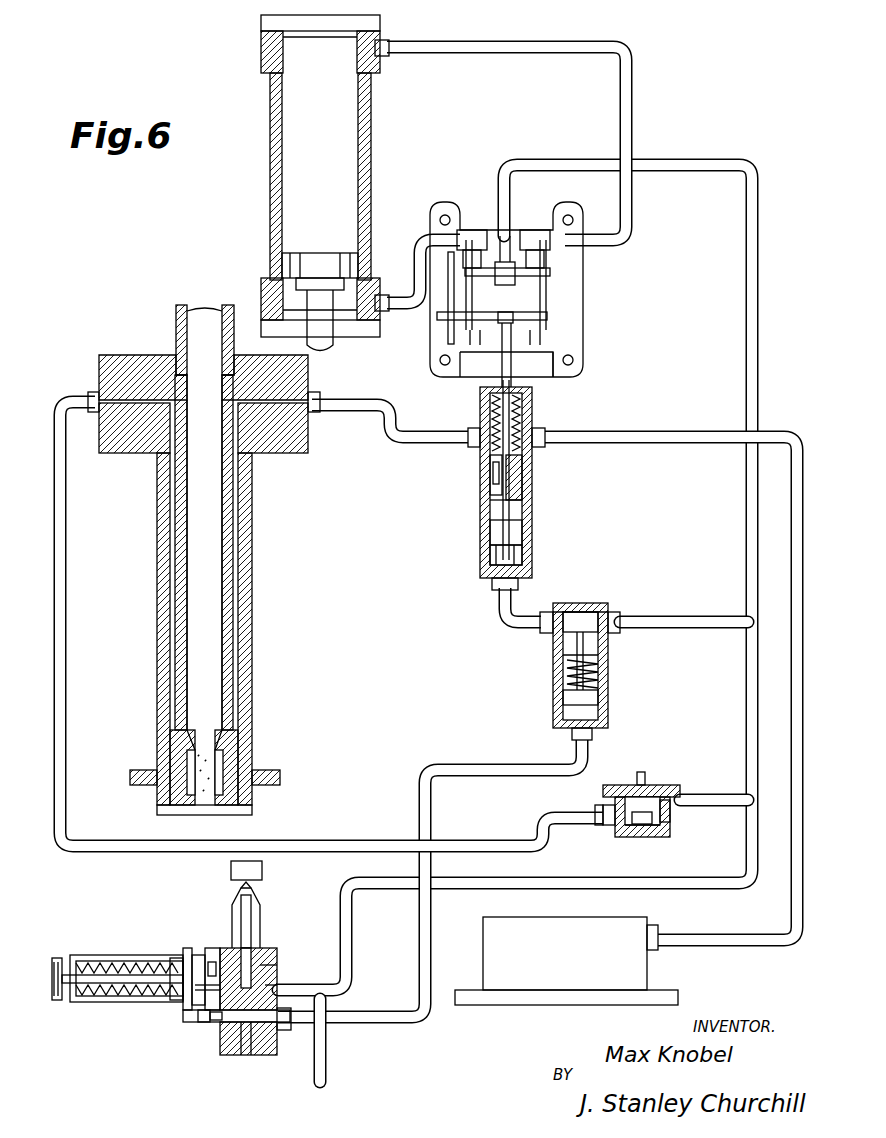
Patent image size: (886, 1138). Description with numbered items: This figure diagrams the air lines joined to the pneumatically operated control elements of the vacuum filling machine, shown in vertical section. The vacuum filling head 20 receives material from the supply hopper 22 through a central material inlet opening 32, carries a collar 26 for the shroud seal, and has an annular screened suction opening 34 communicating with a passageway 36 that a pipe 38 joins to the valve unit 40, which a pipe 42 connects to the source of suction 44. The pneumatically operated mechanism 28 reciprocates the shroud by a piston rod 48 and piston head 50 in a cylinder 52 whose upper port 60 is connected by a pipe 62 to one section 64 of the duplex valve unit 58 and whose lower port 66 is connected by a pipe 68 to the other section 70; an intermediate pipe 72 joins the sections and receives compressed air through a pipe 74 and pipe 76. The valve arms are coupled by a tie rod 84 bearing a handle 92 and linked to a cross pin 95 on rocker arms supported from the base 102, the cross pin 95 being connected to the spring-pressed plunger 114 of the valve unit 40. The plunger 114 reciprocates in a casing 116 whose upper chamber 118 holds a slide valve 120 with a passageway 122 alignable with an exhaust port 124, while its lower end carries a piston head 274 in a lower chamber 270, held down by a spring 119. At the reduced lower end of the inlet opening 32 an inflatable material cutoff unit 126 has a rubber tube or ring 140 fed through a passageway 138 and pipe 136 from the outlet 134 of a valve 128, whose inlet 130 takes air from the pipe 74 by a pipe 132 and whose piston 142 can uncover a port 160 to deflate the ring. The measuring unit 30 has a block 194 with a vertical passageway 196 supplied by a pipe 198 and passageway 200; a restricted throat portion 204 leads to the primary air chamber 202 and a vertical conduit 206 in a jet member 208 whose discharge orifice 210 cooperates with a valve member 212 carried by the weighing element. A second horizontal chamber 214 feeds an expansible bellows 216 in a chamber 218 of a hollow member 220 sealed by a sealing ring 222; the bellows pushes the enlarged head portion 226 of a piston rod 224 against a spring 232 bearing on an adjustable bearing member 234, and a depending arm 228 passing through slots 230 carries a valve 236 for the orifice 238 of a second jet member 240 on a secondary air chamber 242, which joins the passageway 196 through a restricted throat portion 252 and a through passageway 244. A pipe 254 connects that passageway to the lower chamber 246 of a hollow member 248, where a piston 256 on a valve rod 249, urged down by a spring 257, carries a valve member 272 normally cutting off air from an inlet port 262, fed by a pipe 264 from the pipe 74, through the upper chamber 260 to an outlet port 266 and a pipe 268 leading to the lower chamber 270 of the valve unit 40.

The vacuum filling head 20 is at (250, 665).
The material supply hopper 22 is at (176, 318).
The collar 26 is at (280, 778).
The pneumatically operated mechanism 28 is at (315, 191).
The pneumatically operated control means 30 is at (187, 985).
The central material inlet opening 32 is at (204, 565).
The annular screened suction opening 34 is at (235, 812).
The passageway 36 is at (208, 572).
The pipe 38 is at (352, 411).
The valve unit 40 is at (506, 485).
The pipe 42 is at (682, 432).
The source of suction 44 is at (566, 961).
The piston rod 48 is at (335, 342).
The piston head 50 is at (318, 262).
The cylinder 52 is at (372, 138).
The duplex valve unit 58 is at (531, 278).
The upper port 60 is at (357, 45).
The pipe 62 is at (633, 122).
The valve section 64 is at (537, 236).
The lower port 66 is at (384, 313).
The pipe 68 is at (418, 246).
The valve section 70 is at (470, 230).
The intermediate pipe 72 is at (520, 234).
The pipe 74 is at (758, 322).
The pipe 76 is at (328, 1052).
The tie rod 84 is at (552, 272).
The handle 92 is at (502, 265).
The cross pin 95 is at (548, 320).
The base 102 is at (578, 372).
The spring-pressed plunger 114 is at (502, 367).
The casing 116 is at (533, 515).
The upper chamber 118 is at (522, 410).
The spring 119 is at (490, 410).
The slide valve 120 is at (523, 476).
The passageway 122 is at (494, 480).
The exhaust port 124 is at (490, 465).
The inflatable material cutoff unit 126 is at (200, 752).
The valve 128 is at (653, 803).
The inlet 130 is at (670, 818).
The pipe 132 is at (702, 797).
The valve outlet 134 is at (615, 826).
The pipe 136 is at (506, 845).
The passageway 138 is at (165, 597).
The inflatable member 140 is at (187, 793).
The piston 142 is at (650, 830).
The port 160 is at (642, 838).
The block 194 is at (268, 1052).
The vertical passageway 196 is at (278, 961).
The pipe 198 is at (332, 978).
The passageway 200 is at (280, 983).
The horizontal chamber 202 is at (272, 955).
The restricted throat portion 204 is at (270, 950).
The vertical conduit 206 is at (240, 910).
The jet member 208 is at (258, 905).
The discharge orifice 210 is at (242, 888).
The valve member 212 is at (262, 870).
The second horizontal chamber 214 is at (225, 955).
The expansible bellows 216 is at (188, 950).
The chamber 218 is at (195, 958).
The hollow member 220 is at (78, 960).
The resilient sealing ring 222 is at (211, 962).
The piston rod 224 is at (110, 995).
The enlarged head portion 226 is at (172, 960).
The depending arm 228 is at (185, 1000).
The slots 230 is at (192, 1006).
The spring 232 is at (105, 958).
The adjustable bearing member 234 is at (58, 1001).
The valve 236 is at (205, 1022).
The orifice 238 is at (212, 1025).
The second jet member 240 is at (215, 1030).
The secondary air chamber 242 is at (240, 1040).
The through passageway 244 is at (275, 1036).
The lower chamber 246 is at (600, 652).
The hollow member 248 is at (600, 670).
The valve rod 249 is at (600, 642).
The restricted throat portion 252 is at (246, 1058).
The pipe 254 is at (404, 1024).
The piston 256 is at (570, 700).
The spring 257 is at (563, 680).
The upper chamber 260 is at (563, 640).
The inlet port 262 is at (622, 612).
The pipe 264 is at (681, 623).
The outlet port 266 is at (548, 612).
The pipe 268 is at (498, 602).
The lower chamber 270 is at (518, 540).
The valve member 272 is at (590, 603).
The piston head 274 is at (490, 555).